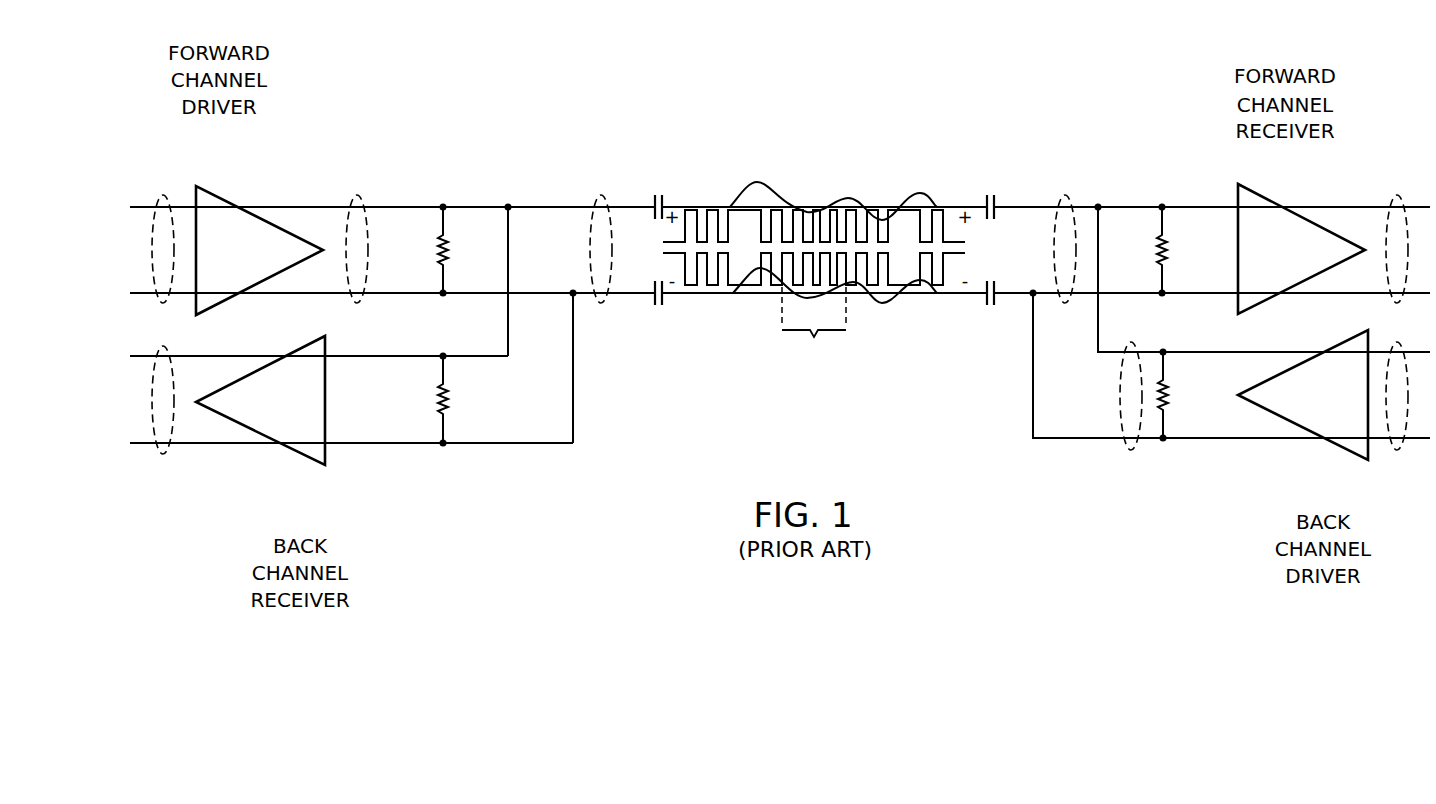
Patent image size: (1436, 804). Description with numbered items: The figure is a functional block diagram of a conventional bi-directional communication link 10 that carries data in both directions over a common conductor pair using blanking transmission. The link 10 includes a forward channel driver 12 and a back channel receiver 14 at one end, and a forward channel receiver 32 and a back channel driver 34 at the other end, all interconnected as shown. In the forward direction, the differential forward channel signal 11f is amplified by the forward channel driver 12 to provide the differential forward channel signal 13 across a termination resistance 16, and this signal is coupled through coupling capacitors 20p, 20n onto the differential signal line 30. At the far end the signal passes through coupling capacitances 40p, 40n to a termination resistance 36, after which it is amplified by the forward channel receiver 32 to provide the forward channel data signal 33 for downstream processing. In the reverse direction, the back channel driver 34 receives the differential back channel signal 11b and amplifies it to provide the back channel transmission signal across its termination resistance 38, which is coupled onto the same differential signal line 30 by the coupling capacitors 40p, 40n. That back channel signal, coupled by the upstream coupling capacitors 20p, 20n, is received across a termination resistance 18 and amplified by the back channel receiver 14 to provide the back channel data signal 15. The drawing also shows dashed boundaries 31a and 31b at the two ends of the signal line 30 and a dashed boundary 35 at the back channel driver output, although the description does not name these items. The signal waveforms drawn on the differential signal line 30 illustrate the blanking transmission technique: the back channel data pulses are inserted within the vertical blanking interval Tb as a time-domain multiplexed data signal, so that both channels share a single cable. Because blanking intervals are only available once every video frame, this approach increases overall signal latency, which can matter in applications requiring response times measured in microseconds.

The bi-directional communication link 10 is at (785, 132).
The differential forward channel signal 11f is at (163, 196).
The differential back channel signal 11b is at (1397, 450).
The forward channel driver 12 is at (227, 190).
The differential forward channel signal 13 is at (357, 196).
The back channel receiver 14 is at (295, 453).
The back channel data signal 15 is at (163, 452).
The termination resistance 16 is at (438, 245).
The termination resistance 18 is at (438, 402).
The coupling capacitor 20p is at (655, 192).
The coupling capacitor 20n is at (655, 308).
The differential signal line 30 is at (852, 172).
The transmit side connector 31a is at (601, 196).
The receive side connector 31b is at (1065, 196).
The forward channel receiver 32 is at (1262, 196).
The forward channel data signal 33 is at (1397, 196).
The back channel driver 34 is at (1343, 453).
The back channel driver output 35 is at (1131, 450).
The termination resistance 36 is at (1168, 245).
The termination resistance 38 is at (1169, 398).
The coupling capacitance 40p is at (992, 192).
The coupling capacitance 40n is at (992, 308).
The vertical blanking interval Tb is at (814, 326).